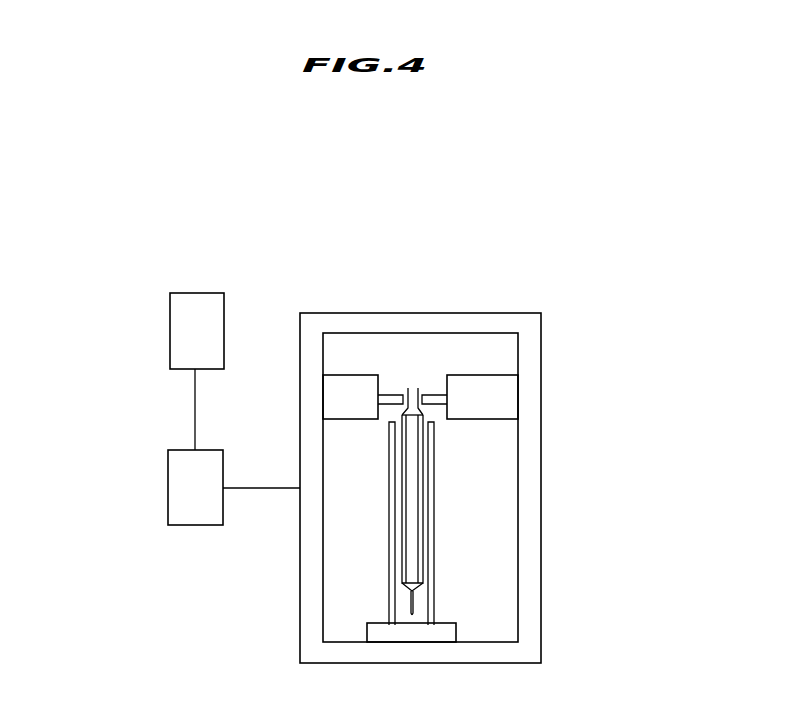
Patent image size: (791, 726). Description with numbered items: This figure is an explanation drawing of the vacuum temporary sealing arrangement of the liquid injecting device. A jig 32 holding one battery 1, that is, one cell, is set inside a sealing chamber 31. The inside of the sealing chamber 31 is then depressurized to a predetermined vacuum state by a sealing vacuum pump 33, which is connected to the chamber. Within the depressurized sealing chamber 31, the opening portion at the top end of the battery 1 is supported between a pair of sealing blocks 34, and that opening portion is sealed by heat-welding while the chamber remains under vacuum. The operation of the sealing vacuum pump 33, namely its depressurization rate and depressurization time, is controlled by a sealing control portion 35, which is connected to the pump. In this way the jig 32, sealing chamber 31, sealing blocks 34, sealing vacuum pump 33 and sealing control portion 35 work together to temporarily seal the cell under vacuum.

The battery 1 is at (423, 512).
The sealing chamber 31 is at (543, 602).
The jig 32 is at (393, 533).
The sealing vacuum pump 33 is at (177, 477).
The sealing blocks 34 is at (399, 390).
The sealing control portion 35 is at (195, 316).